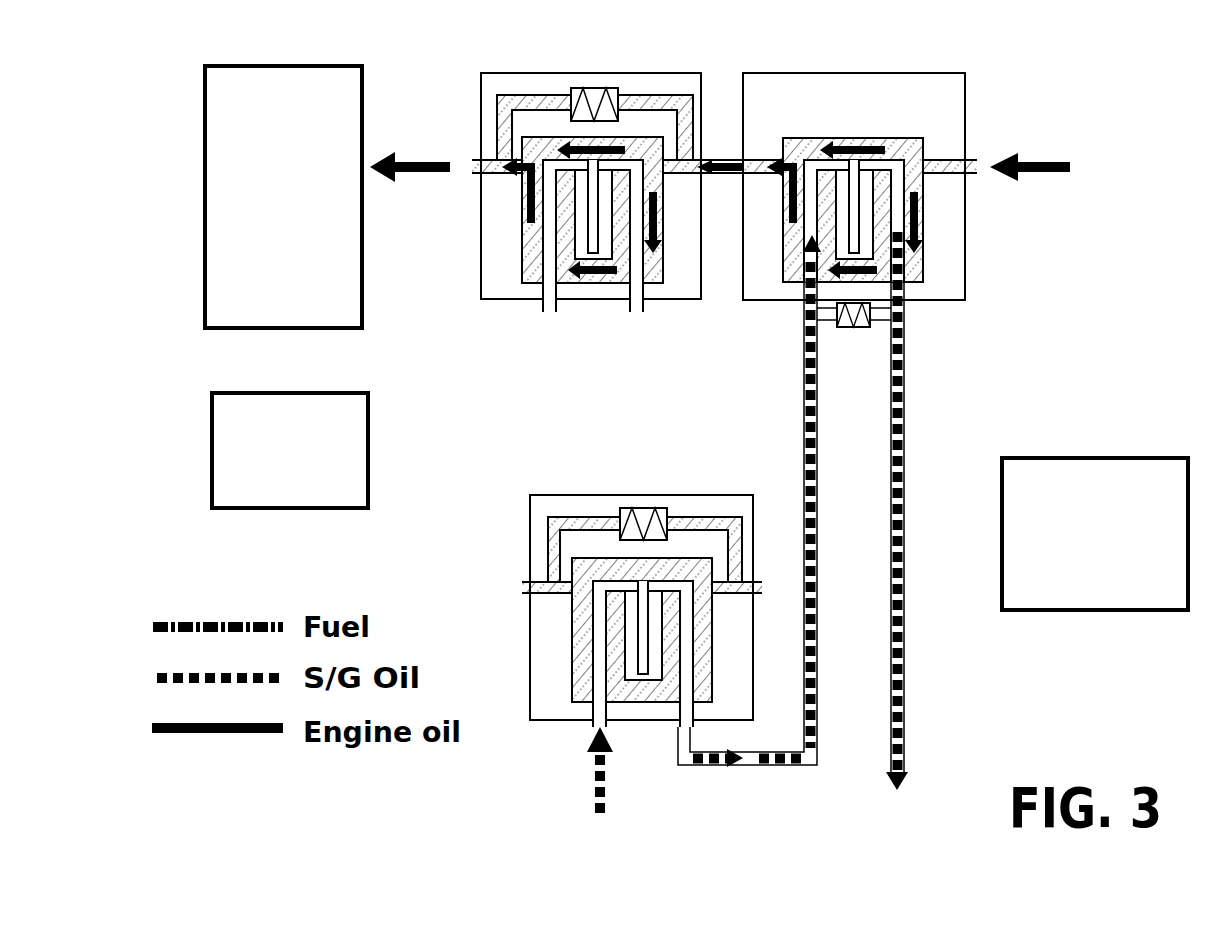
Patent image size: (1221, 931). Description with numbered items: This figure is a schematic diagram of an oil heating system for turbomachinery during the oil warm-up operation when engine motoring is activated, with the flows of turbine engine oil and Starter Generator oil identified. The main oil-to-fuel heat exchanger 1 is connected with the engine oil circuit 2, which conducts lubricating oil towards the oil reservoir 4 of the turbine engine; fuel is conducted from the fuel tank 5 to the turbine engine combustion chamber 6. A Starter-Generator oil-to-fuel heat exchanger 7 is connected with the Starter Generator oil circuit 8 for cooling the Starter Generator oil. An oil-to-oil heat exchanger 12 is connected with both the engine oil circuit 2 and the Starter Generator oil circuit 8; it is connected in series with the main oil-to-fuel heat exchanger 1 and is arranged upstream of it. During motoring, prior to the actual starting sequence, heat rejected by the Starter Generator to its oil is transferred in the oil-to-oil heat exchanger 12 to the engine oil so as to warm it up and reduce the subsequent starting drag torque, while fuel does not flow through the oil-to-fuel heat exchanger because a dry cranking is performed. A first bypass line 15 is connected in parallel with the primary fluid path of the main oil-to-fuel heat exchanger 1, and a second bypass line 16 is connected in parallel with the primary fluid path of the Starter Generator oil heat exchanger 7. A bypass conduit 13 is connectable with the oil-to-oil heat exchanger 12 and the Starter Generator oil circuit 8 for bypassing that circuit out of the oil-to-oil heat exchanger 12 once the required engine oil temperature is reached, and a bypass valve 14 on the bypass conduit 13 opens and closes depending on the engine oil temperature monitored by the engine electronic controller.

The main oil-to-fuel heat exchanger 1 is at (588, 156).
The engine oil circuit 2 is at (415, 173).
The oil reservoir 4 is at (218, 188).
The fuel tank 5 is at (1095, 473).
The combustion chamber 6 is at (226, 420).
The Starter-Generator oil-to-fuel heat exchanger 7 is at (605, 657).
The Starter Generator oil circuit 8 is at (818, 747).
The oil-to-oil heat exchanger 12 is at (956, 97).
The bypass conduit 13 is at (880, 315).
The bypass valve 14 is at (837, 323).
The first bypass line 15 is at (680, 100).
The second bypass line 16 is at (556, 530).